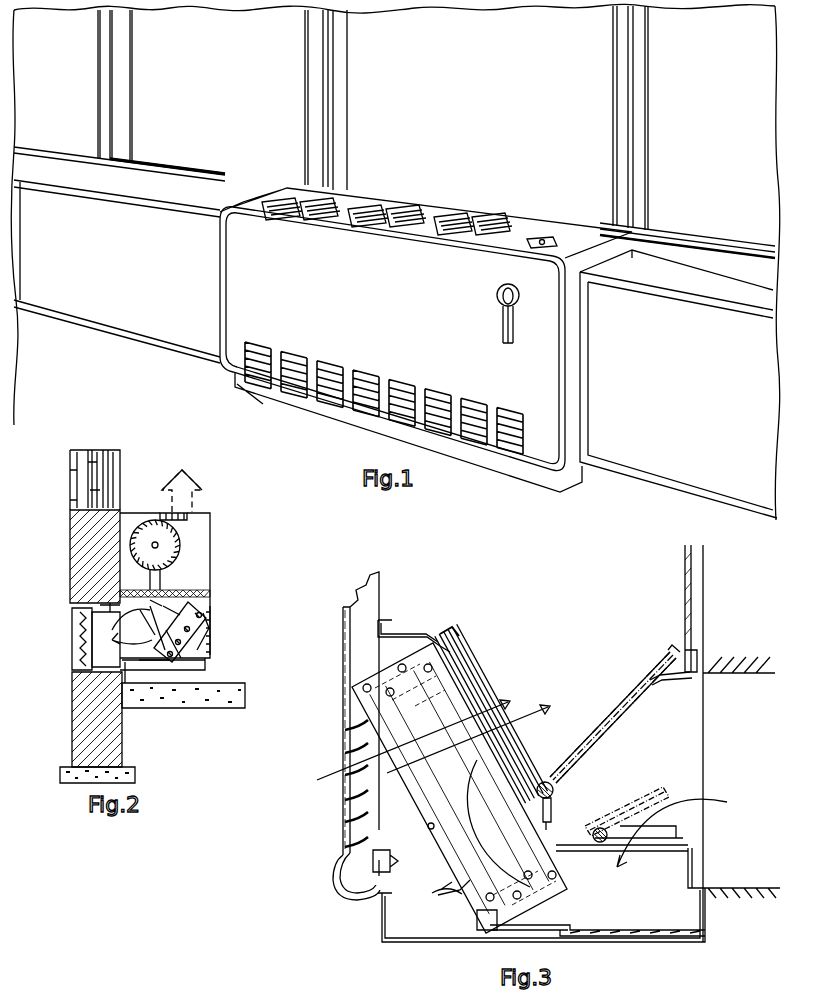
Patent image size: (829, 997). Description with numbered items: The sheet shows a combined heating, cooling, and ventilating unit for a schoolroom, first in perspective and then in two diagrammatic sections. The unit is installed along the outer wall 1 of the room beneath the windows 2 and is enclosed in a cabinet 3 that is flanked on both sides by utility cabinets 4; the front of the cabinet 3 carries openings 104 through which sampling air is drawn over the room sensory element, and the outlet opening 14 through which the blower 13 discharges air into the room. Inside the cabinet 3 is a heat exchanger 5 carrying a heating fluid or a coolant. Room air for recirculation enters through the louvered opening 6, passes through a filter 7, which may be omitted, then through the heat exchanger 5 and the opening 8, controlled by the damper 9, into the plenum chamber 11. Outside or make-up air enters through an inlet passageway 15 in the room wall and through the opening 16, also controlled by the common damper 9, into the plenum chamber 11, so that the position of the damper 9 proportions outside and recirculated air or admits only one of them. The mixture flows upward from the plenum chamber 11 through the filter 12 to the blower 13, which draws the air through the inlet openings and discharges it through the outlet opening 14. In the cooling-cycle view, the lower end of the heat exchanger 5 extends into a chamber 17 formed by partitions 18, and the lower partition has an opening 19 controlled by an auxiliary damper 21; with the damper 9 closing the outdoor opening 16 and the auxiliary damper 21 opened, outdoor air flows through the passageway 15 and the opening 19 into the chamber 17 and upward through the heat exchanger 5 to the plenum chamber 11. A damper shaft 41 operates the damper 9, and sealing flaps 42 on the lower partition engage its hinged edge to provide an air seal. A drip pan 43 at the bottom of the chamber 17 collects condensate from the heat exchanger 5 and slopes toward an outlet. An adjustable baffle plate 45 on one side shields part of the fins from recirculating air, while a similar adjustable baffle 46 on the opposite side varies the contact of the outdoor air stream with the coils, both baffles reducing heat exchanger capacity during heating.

In FIG. 2, the outer wall 1 is at (70, 557).
In FIG. 1, the windows 2 is at (497, 87).
In FIG. 2, the windows 2 is at (108, 470).
In FIG. 1, the cabinet 3 is at (240, 278).
In FIG. 2, the cabinet 3 is at (212, 550).
In FIG. 3, the cabinet 3 is at (343, 637).
In FIG. 1, the utility cabinets 4 is at (125, 318).
In FIG. 2, the heat exchanger 5 is at (206, 612).
In FIG. 3, the heat exchanger 5 is at (408, 653).
In FIG. 1, the louvered opening 6 is at (400, 386).
In FIG. 2, the louvered opening 6 is at (212, 645).
In FIG. 3, the louvered opening 6 is at (345, 773).
In FIG. 2, the filter 7 is at (208, 630).
In FIG. 2, the opening 8 is at (175, 593).
In FIG. 3, the opening 8 is at (440, 703).
In FIG. 2, the damper 9 is at (150, 606).
In FIG. 3, the damper 9 is at (443, 711).
In FIG. 3, the plenum chamber 11 is at (582, 636).
In FIG. 2, the filter 12 is at (190, 590).
In FIG. 2, the blower 13 is at (180, 541).
In FIG. 1, the outlet opening 14 is at (450, 243).
In FIG. 2, the outlet opening 14 is at (190, 512).
In FIG. 2, the inlet passageway 15 is at (72, 628).
In FIG. 3, the inlet passageway 15 is at (757, 751).
In FIG. 2, the opening 16 is at (130, 617).
In FIG. 3, the opening 16 is at (638, 706).
In FIG. 2, the chamber 17 is at (160, 663).
In FIG. 3, the chamber 17 is at (641, 905).
In FIG. 3, the partition 18 is at (445, 897).
In FIG. 3, the opening 19 is at (690, 853).
In FIG. 2, the auxiliary damper 21 is at (138, 663).
In FIG. 3, the auxiliary damper 21 is at (652, 787).
In FIG. 3, the damper shaft 41 is at (553, 788).
In FIG. 3, the sealing flaps 42 is at (549, 804).
In FIG. 3, the drip pan 43 is at (520, 933).
In FIG. 3, the baffle plate 45 is at (427, 825).
In FIG. 3, the adjustable baffle 46 is at (540, 801).
In FIG. 1, the openings 104 is at (499, 330).